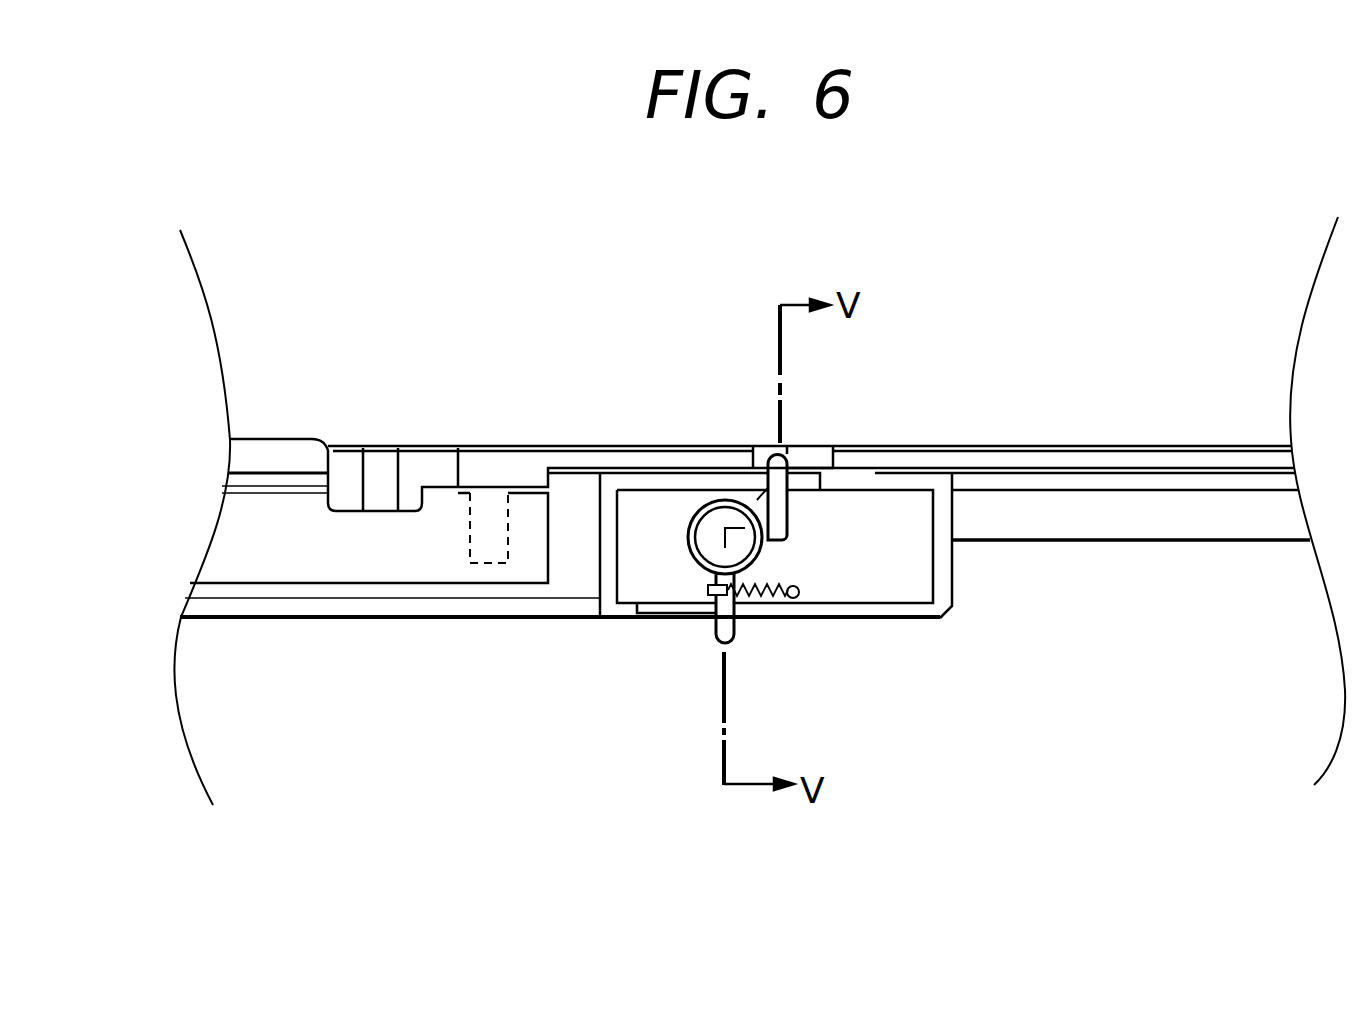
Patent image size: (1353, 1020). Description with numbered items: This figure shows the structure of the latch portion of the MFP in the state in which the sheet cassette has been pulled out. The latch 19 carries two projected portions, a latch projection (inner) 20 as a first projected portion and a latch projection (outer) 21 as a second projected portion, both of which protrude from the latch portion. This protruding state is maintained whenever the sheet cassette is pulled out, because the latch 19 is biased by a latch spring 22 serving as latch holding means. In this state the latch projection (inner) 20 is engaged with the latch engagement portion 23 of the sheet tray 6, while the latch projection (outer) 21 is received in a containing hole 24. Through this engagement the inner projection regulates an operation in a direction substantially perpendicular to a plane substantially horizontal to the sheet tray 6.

The sheet tray 6 is at (280, 345).
The latch 19 is at (713, 523).
The latch projection (inner) 20 is at (787, 462).
The latch projection (outer) 21 is at (735, 633).
The latch spring 22 is at (765, 600).
The latch engagement portion 23 is at (827, 453).
The containing hole 24 is at (652, 608).